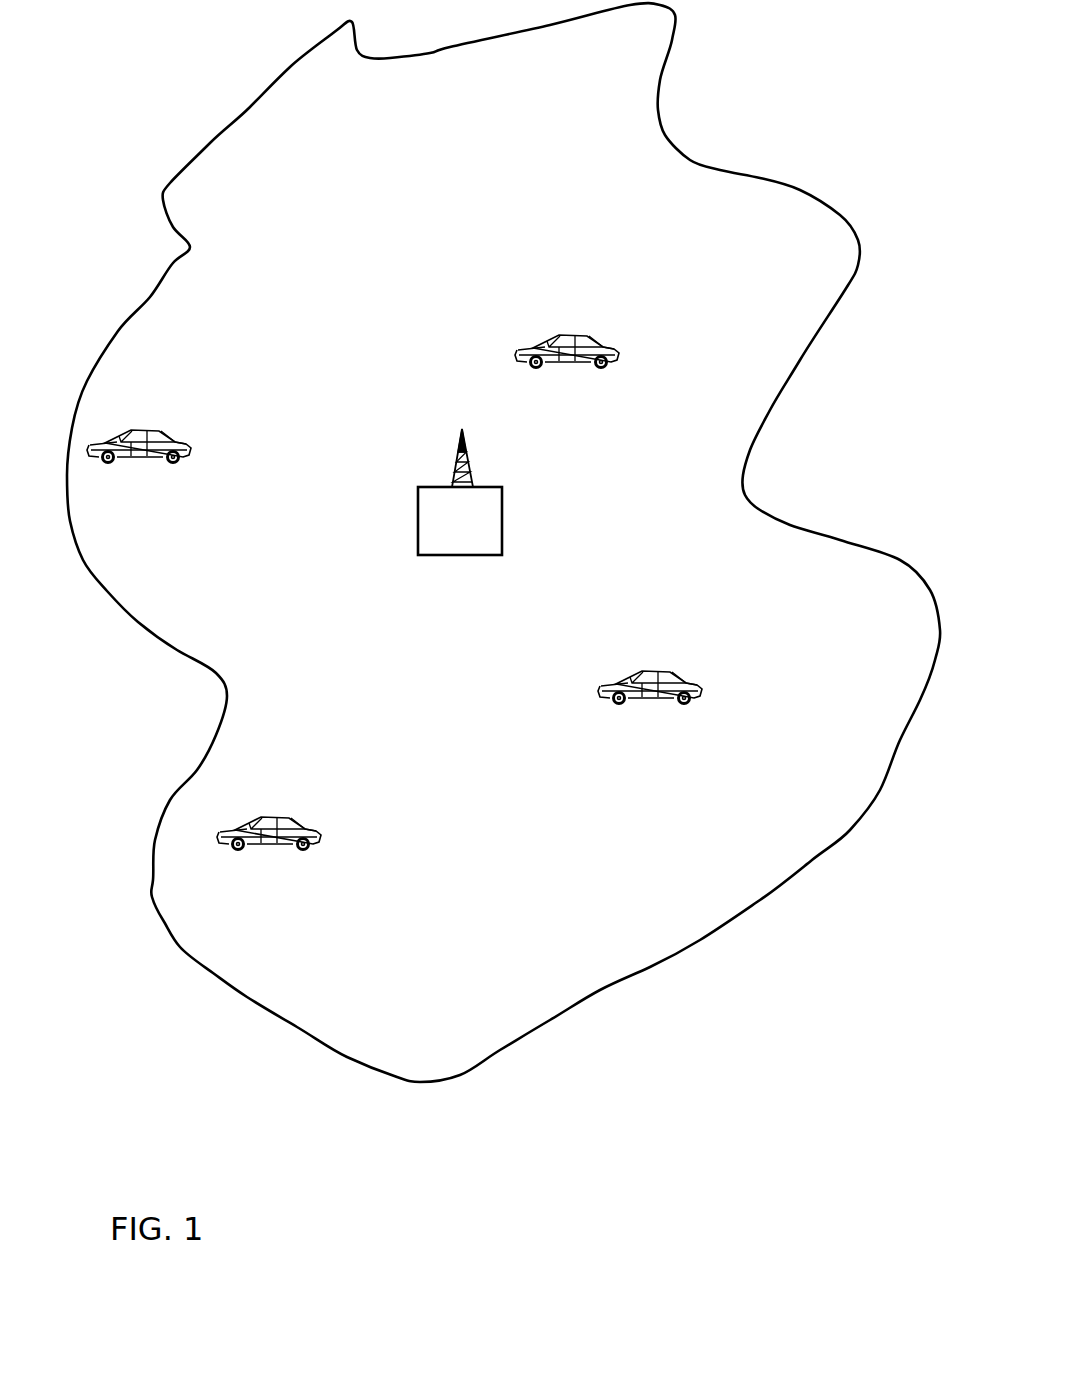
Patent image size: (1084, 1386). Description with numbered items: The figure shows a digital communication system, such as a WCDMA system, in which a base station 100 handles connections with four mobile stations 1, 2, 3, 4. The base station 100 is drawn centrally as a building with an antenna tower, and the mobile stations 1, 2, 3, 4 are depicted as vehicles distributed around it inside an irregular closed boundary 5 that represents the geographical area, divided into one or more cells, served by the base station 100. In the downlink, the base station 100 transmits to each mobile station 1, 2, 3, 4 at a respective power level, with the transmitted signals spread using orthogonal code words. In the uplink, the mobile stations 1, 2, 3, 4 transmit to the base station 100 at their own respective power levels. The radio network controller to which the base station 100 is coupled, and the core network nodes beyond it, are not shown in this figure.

The mobile station 1 is at (672, 670).
The mobile station 2 is at (290, 816).
The mobile station 3 is at (583, 333).
The mobile station 4 is at (161, 432).
The cell coverage area boundary 5 is at (812, 858).
The base station 100 is at (502, 505).